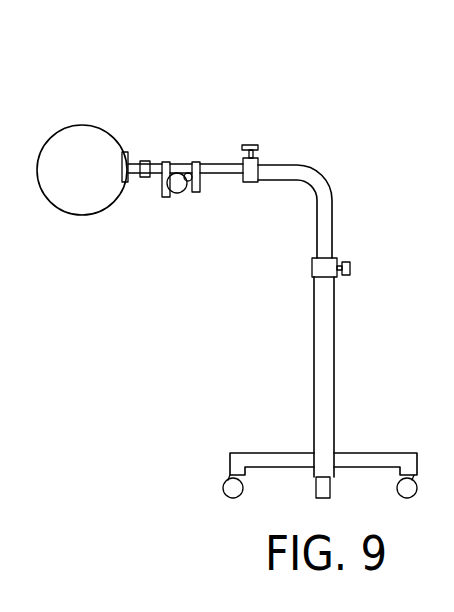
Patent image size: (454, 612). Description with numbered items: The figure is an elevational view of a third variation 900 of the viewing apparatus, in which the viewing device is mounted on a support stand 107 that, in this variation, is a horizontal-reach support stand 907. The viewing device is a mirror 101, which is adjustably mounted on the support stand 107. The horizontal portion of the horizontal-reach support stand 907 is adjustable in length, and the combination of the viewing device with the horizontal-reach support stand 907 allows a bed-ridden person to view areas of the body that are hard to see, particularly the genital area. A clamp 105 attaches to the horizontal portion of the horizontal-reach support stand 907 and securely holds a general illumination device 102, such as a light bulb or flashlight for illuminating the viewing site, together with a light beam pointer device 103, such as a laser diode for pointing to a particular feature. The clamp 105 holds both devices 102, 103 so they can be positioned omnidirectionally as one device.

The third variation of the viewing apparatus 900 is at (206, 58).
The mirror 101 is at (73, 193).
The general illumination device 102 is at (177, 193).
The light beam pointer device 103 is at (191, 181).
The clamp 105 is at (198, 162).
The support stand 107 is at (327, 322).
The horizontal-reach support stand 907 is at (317, 393).